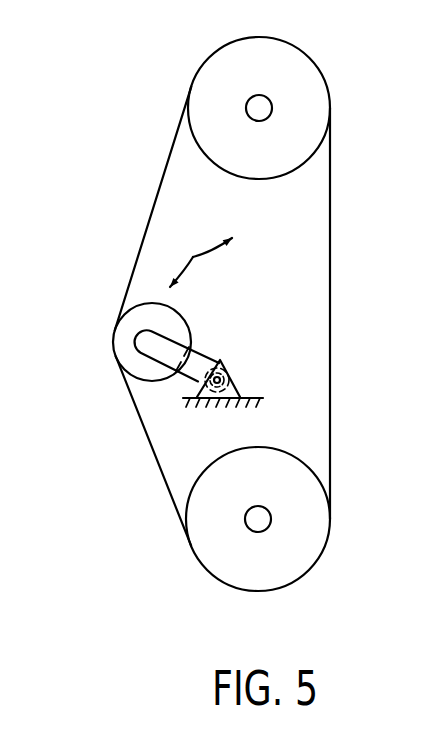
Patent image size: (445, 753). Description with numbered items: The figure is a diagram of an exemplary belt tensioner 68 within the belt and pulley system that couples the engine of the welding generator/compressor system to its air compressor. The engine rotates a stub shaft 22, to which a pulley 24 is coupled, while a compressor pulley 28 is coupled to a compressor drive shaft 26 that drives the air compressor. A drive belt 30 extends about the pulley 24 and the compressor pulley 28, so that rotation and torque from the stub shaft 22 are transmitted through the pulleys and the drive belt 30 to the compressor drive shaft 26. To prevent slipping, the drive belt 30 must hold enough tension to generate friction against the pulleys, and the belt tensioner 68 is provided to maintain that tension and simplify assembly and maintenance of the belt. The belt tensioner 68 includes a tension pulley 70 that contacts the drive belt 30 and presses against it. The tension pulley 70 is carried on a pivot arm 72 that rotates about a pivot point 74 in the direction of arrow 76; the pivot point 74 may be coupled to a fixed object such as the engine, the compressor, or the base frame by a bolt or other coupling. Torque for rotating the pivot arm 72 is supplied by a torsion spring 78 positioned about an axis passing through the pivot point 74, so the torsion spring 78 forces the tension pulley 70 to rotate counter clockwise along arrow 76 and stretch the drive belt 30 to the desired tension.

The stub shaft 22 is at (261, 104).
The pulley 24 is at (277, 48).
The compressor drive shaft 26 is at (267, 520).
The compressor pulley 28 is at (282, 573).
The drive belt 30 is at (331, 313).
The belt tensioner 68 is at (100, 322).
The tension pulley 70 is at (127, 348).
The pivot arm 72 is at (183, 374).
The pivot point 74 is at (220, 360).
The arrow 76 is at (193, 257).
The torsion spring 78 is at (233, 378).